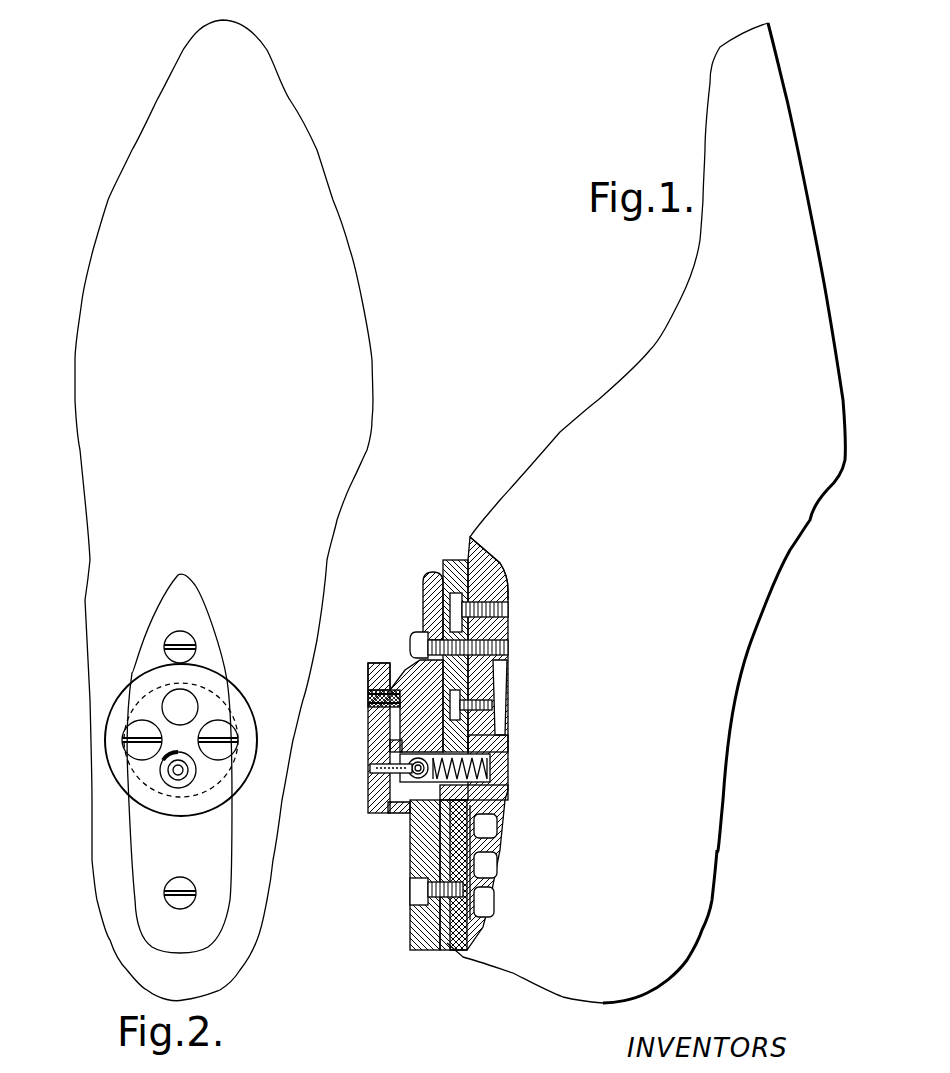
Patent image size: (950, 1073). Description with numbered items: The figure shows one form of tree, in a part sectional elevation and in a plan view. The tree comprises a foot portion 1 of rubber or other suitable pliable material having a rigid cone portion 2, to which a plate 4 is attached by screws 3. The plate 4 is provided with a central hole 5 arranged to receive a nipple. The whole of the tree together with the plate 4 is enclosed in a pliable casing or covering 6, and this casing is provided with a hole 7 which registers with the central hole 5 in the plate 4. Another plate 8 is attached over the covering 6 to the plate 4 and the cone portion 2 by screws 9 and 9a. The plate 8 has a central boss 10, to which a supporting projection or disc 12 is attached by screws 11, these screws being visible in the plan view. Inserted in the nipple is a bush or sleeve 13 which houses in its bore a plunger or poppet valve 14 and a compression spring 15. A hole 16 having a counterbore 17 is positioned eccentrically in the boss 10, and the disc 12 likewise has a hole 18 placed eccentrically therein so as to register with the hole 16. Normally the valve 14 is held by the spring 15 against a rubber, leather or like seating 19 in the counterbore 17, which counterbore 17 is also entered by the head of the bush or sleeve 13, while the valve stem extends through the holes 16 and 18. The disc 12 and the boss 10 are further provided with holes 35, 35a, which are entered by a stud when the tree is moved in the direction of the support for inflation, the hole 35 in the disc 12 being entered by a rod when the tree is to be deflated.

In FIG. 1, the foot portion 1 is at (475, 556).
In FIG. 1, the rigid cone portion 2 is at (495, 574).
In FIG. 1, the screws 3 is at (458, 603).
In FIG. 1, the plate 4 is at (462, 662).
In FIG. 1, the central hole 5 is at (507, 738).
In FIG. 2, the pliable casing or covering 6 is at (224, 510).
In FIG. 1, the pliable casing or covering 6 is at (646, 513).
In FIG. 1, the hole 7 is at (503, 798).
In FIG. 2, the plate 8 is at (138, 871).
In FIG. 1, the plate 8 is at (437, 923).
In FIG. 2, the screws 9 is at (180, 908).
In FIG. 1, the screws 9 is at (428, 889).
In FIG. 2, the screws 9a is at (180, 632).
In FIG. 1, the screws 9a is at (428, 638).
In FIG. 2, the central boss 10 is at (220, 672).
In FIG. 1, the central boss 10 is at (420, 807).
In FIG. 2, the screws 11 is at (214, 735).
In FIG. 2, the supporting projection or disc 12 is at (233, 703).
In FIG. 1, the supporting projection or disc 12 is at (400, 778).
In FIG. 1, the bush or sleeve 13 is at (402, 680).
In FIG. 1, the plunger or poppet valve 14 is at (408, 775).
In FIG. 1, the compression spring 15 is at (484, 768).
In FIG. 1, the hole 16 is at (398, 752).
In FIG. 1, the counterbore 17 is at (460, 708).
In FIG. 2, the hole 18 is at (178, 786).
In FIG. 1, the hole 18 is at (372, 760).
In FIG. 1, the seating 19 is at (422, 813).
In FIG. 1, the hole 35 is at (368, 695).
In FIG. 2, the hole 35a is at (170, 700).
In FIG. 1, the hole 35a is at (373, 668).